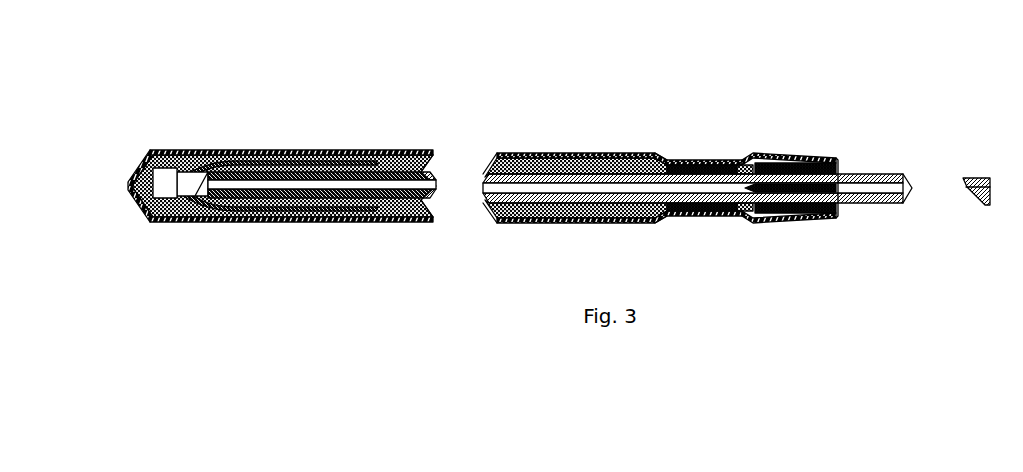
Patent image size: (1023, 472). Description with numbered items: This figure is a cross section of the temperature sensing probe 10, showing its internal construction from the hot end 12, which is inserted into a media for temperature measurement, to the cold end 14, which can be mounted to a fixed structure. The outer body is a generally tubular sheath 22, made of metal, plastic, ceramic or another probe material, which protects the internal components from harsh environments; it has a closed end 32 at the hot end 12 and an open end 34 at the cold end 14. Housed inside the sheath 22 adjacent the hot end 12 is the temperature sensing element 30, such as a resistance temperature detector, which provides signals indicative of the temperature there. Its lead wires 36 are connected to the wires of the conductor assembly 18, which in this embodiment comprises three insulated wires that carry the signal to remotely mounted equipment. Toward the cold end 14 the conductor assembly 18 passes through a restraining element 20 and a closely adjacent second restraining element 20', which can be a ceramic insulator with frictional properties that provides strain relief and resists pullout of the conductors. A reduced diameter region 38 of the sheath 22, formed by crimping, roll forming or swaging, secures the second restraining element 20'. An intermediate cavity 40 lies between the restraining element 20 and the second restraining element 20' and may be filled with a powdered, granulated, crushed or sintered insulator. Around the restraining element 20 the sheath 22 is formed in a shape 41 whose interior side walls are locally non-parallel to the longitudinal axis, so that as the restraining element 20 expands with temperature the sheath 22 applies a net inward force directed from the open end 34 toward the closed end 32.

The temperature sensing probe 10 is at (350, 274).
The hot end 12 is at (160, 122).
The cold end 14 is at (809, 77).
The conductor assembly 18 is at (400, 153).
The restraining element 20 is at (599, 164).
The second restraining element 20' is at (726, 228).
The sheath 22 is at (495, 225).
The temperature sensing element 30 is at (165, 203).
The closed end 32 is at (210, 303).
The open end 34 is at (849, 158).
The lead wires 36 is at (231, 157).
The reduced diameter region 38 is at (697, 140).
The intermediate cavity 40 is at (750, 225).
The shape 41 is at (783, 127).